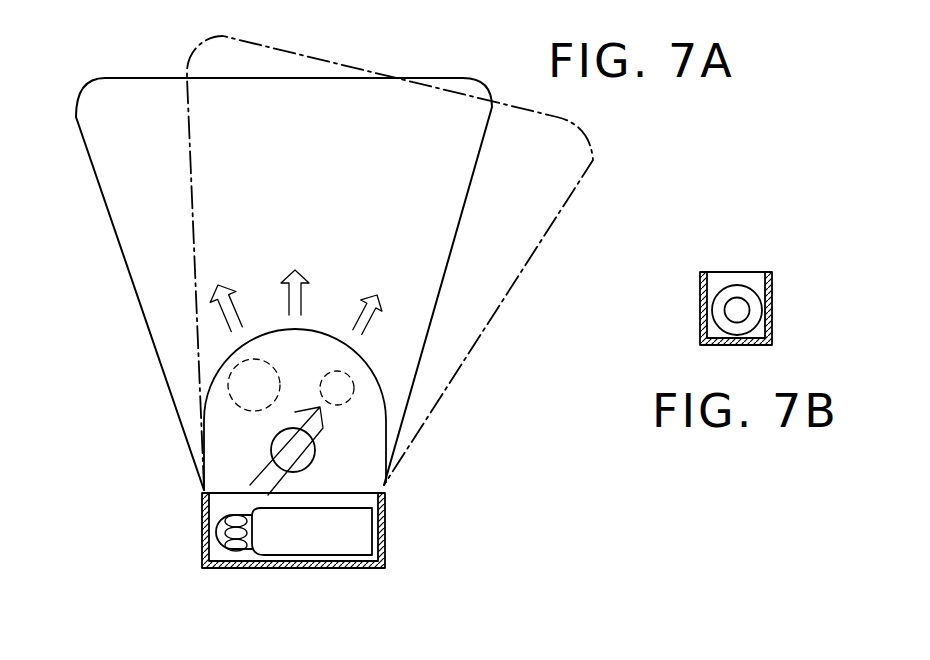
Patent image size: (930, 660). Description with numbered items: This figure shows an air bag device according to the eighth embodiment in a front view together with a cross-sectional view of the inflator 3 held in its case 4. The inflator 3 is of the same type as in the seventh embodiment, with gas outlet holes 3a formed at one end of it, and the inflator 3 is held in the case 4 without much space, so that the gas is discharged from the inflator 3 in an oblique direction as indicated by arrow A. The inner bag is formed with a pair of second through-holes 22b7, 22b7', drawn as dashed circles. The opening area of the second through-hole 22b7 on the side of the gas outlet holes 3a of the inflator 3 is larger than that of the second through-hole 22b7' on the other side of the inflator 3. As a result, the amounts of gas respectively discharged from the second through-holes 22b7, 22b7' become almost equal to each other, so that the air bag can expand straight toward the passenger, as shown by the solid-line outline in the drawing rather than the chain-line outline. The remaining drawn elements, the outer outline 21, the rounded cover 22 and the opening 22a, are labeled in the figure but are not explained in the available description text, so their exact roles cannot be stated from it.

In FIG. 7A, the reflector plate 21 is at (433, 277).
In FIG. 7A, the lamp cover 22 is at (220, 468).
In FIG. 7A, the ventilation hole 22a is at (318, 457).
In FIG. 7A, the second through-hole 22b7 is at (169, 385).
In FIG. 7A, the second through-hole 22b7' is at (426, 419).
In FIG. 7A, the case 4 is at (204, 543).
In FIG. 7B, the case 4 is at (772, 318).
In FIG. 7A, the inflator 3 is at (293, 533).
In FIG. 7B, the inflator 3 is at (737, 307).
In FIG. 7A, the gas outlet holes 3a is at (225, 546).
In FIG. 7A, the arrow A is at (300, 473).